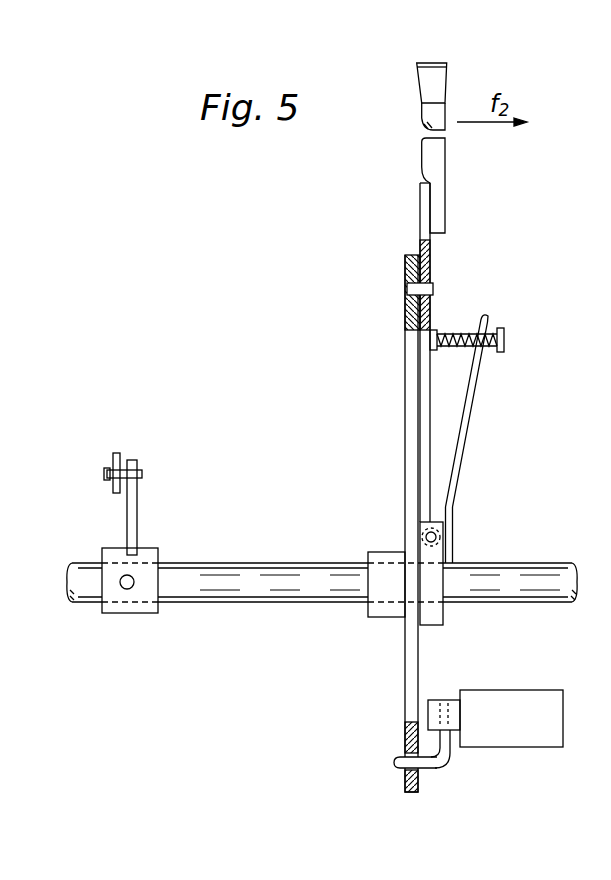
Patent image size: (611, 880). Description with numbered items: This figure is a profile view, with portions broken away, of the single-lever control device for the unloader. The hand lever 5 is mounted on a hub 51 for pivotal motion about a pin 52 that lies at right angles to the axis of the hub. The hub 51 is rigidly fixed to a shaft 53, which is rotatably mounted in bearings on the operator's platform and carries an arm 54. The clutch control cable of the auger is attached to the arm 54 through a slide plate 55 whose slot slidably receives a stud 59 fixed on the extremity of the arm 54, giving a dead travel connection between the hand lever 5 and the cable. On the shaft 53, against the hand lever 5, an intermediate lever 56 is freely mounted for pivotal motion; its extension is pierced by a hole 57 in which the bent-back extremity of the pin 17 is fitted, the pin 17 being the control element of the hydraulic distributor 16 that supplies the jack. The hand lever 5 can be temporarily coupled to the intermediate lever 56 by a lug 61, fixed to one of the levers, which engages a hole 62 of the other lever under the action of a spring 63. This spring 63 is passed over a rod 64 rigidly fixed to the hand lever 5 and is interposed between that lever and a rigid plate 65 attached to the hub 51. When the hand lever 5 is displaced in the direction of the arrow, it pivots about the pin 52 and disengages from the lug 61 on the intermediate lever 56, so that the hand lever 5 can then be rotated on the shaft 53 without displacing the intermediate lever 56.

The hand lever 5 is at (436, 165).
The distributor 16 is at (532, 737).
The pin 17 is at (427, 763).
The hub 51 is at (436, 617).
The pin 52 is at (442, 535).
The shaft 53 is at (278, 600).
The arm 54 is at (137, 502).
The slide plate 55 is at (115, 465).
The intermediate lever 56 is at (405, 380).
The hole 57 is at (402, 757).
The stud 59 is at (103, 472).
The lug 61 is at (408, 290).
The hole 62 is at (433, 288).
The spring 63 is at (467, 343).
The rod 64 is at (453, 333).
The rigid plate 65 is at (477, 422).